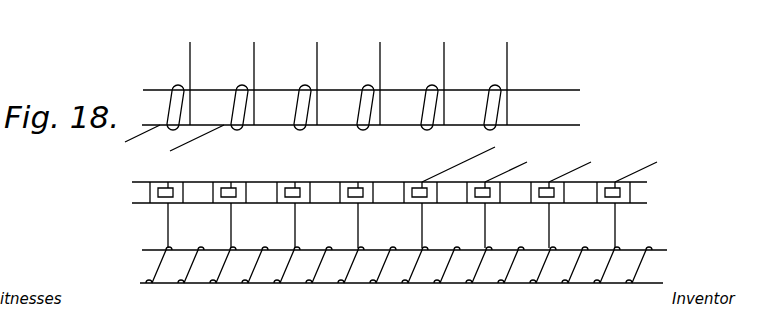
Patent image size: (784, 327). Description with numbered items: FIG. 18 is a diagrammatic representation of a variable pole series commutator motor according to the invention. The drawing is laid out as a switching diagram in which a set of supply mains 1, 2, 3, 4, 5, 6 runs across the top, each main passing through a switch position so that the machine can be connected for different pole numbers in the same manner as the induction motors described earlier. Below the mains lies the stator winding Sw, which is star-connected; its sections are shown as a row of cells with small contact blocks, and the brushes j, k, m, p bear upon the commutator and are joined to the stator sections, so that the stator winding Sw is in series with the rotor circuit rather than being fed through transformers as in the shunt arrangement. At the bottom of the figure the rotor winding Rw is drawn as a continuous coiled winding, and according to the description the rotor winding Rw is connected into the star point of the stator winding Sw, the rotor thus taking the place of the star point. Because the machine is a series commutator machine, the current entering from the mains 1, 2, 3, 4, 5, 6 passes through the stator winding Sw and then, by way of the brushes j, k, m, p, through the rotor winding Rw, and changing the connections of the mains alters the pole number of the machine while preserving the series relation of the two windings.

The main 1 is at (189, 71).
The main 2 is at (253, 71).
The main 3 is at (316, 71).
The main 4 is at (379, 71).
The line wire 5 is at (443, 71).
The line wire 6 is at (506, 71).
The stator winding Sw is at (233, 98).
The brush j is at (167, 182).
The brush k is at (228, 182).
The brush m is at (294, 182).
The brush p is at (357, 182).
The rotor winding Rw is at (290, 277).